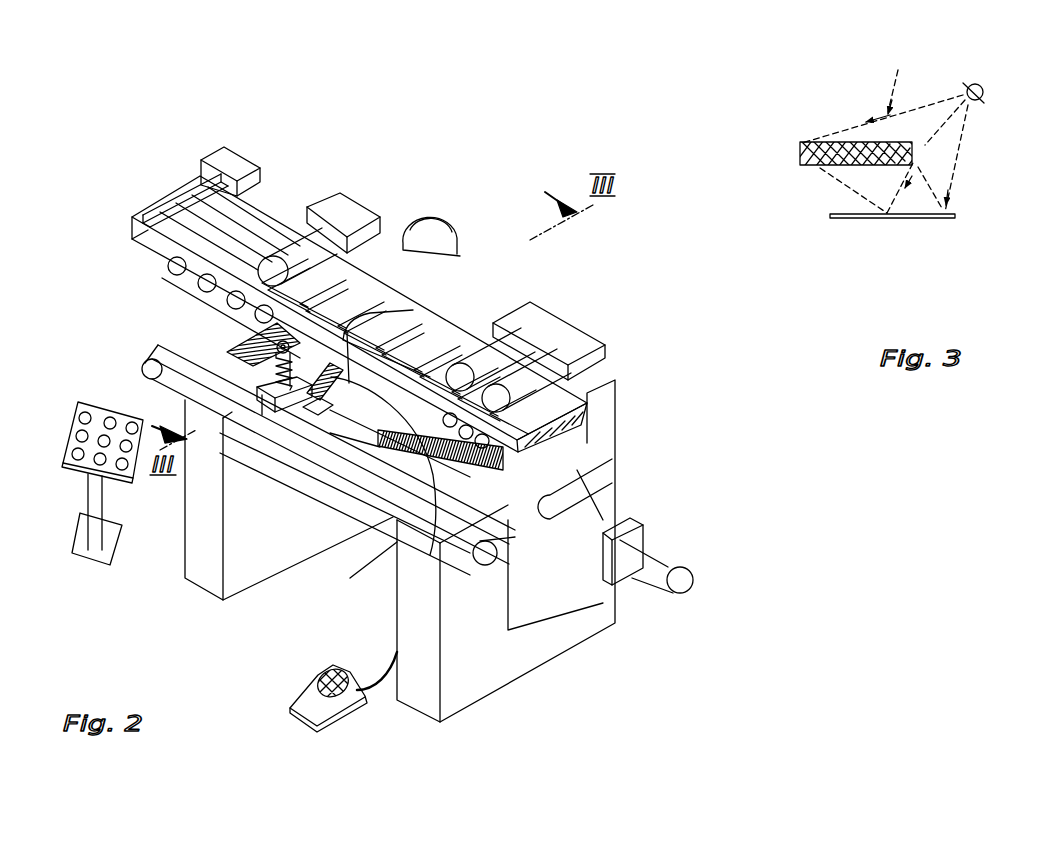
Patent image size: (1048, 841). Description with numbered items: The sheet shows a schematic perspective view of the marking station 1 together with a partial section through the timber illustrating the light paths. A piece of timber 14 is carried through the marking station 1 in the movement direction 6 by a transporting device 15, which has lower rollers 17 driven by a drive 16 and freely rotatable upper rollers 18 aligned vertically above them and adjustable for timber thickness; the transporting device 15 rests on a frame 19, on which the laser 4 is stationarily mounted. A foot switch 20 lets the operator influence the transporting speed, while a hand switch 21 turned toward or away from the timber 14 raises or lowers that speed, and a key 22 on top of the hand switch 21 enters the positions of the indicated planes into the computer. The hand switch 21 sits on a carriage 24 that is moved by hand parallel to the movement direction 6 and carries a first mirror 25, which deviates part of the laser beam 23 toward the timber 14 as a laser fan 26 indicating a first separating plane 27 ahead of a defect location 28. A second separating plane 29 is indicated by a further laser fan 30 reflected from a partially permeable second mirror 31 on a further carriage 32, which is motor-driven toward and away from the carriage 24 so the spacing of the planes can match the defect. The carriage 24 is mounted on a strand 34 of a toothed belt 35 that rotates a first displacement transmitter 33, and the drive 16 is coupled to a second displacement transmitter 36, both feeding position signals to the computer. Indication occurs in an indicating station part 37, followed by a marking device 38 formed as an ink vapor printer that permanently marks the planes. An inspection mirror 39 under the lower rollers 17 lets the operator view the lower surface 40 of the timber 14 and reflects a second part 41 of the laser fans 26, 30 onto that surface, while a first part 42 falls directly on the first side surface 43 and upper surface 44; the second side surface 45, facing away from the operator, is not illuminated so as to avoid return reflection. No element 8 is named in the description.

In FIG. 2, the marking station 1 is at (510, 703).
In FIG. 2, the laser 4 is at (668, 576).
In FIG. 2, the movement direction 6 is at (257, 267).
In FIG. 2, the control panel 8 is at (62, 441).
In FIG. 2, the piece of timber 14 is at (128, 224).
In FIG. 3, the piece of timber 14 is at (799, 141).
In FIG. 2, the transporting device 15 is at (193, 285).
In FIG. 2, the drive 16 is at (407, 245).
In FIG. 2, the lower rollers 17 is at (221, 297).
In FIG. 2, the upper rollers 18 is at (294, 253).
In FIG. 2, the frame 19 is at (584, 646).
In FIG. 2, the foot switch 20 is at (330, 726).
In FIG. 2, the hand switch 21 is at (258, 358).
In FIG. 2, the key 22 is at (266, 343).
In FIG. 2, the laser beam 23 is at (600, 508).
In FIG. 2, the carriage 24 is at (261, 394).
In FIG. 2, the first mirror 25 is at (278, 328).
In FIG. 3, the first mirror 25 is at (980, 102).
In FIG. 2, the laser fan 26 is at (340, 338).
In FIG. 3, the laser fan 26 is at (901, 79).
In FIG. 2, the first separating plane 27 is at (363, 342).
In FIG. 2, the defect location 28 is at (386, 334).
In FIG. 2, the second separating plane 29 is at (445, 330).
In FIG. 2, the further laser fan 30 is at (348, 405).
In FIG. 2, the second mirror 31 is at (334, 408).
In FIG. 2, the further carriage 32 is at (314, 416).
In FIG. 2, the first displacement transmitter 33 is at (465, 548).
In FIG. 2, the strand 34 is at (148, 372).
In FIG. 2, the toothed belt 35 is at (390, 518).
In FIG. 2, the second displacement transmitter 36 is at (442, 223).
In FIG. 2, the indicating station part 37 is at (248, 505).
In FIG. 2, the marking device 38 is at (161, 204).
In FIG. 2, the inspection mirror 39 is at (398, 540).
In FIG. 3, the inspection mirror 39 is at (835, 218).
In FIG. 3, the lower surface 40 is at (848, 168).
In FIG. 3, the second part 41 is at (941, 158).
In FIG. 3, the first part 42 is at (936, 128).
In FIG. 3, the first side surface 43 is at (927, 146).
In FIG. 3, the upper surface 44 is at (837, 142).
In FIG. 3, the second side surface 45 is at (810, 147).